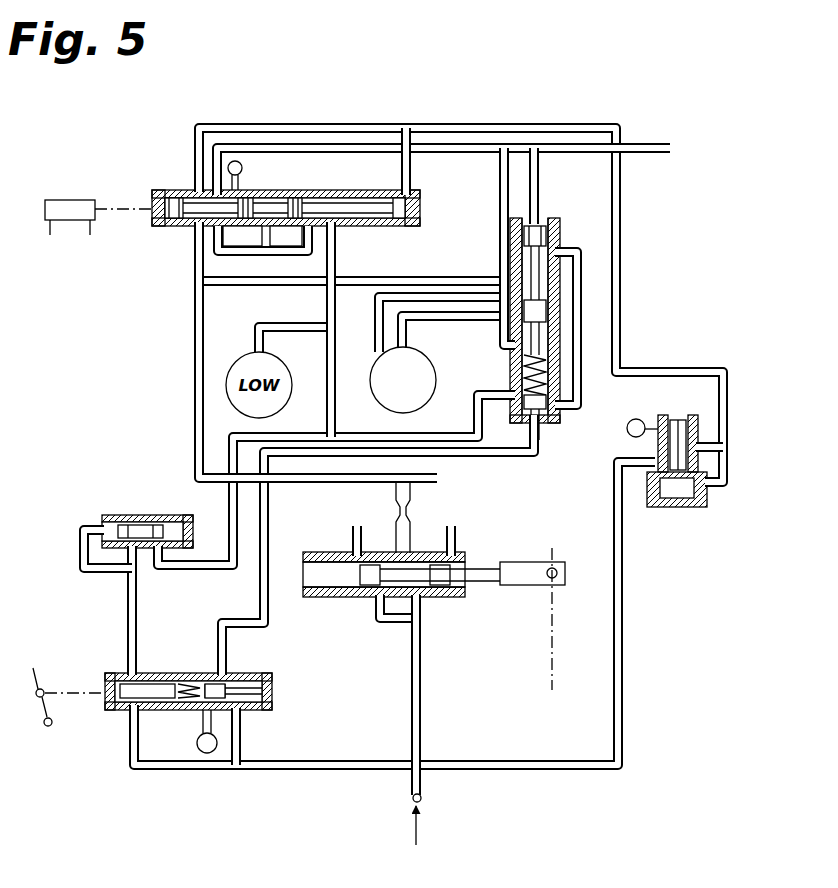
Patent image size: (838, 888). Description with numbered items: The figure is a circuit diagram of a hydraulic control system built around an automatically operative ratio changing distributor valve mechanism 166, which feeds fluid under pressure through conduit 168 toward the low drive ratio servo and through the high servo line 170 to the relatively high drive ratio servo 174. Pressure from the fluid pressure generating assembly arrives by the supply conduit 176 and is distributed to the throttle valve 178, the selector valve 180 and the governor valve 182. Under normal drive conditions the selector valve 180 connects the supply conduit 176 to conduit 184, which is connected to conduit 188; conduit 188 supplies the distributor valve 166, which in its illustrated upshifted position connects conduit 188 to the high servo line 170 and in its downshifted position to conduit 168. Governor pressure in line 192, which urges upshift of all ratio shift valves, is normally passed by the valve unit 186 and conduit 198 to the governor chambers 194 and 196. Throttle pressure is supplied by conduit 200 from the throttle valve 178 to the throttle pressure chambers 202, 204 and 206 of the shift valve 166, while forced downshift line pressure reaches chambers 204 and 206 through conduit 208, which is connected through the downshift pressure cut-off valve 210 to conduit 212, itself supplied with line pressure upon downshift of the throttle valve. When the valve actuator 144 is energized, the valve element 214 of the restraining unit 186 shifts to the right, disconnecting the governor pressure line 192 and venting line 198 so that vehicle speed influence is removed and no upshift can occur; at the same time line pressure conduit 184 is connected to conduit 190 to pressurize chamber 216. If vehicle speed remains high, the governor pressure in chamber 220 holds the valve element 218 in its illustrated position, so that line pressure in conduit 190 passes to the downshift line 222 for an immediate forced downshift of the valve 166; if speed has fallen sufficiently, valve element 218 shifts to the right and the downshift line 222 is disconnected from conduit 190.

The valve actuator 144 is at (73, 198).
The ratio changing distributor valve mechanism 166 is at (564, 310).
The conduit 168 is at (379, 333).
The high servo line 170 is at (468, 322).
The high drive ratio servo 174 is at (432, 397).
The supply conduit 176 is at (423, 789).
The throttle valve 178 is at (116, 709).
The selector valve 180 is at (351, 601).
The governor valve 182 is at (693, 508).
The conduit 184 is at (206, 357).
The valve unit 186 is at (295, 199).
The conduit 188 is at (411, 279).
The conduit 190 is at (282, 254).
The governor pressure line 192 is at (621, 252).
The governor chamber 194 is at (538, 226).
The governor chamber 196 is at (562, 332).
The conduit 198 is at (312, 150).
The conduit 200 is at (258, 590).
The throttle pressure chamber 202 is at (546, 416).
The throttle pressure chamber 204 is at (562, 252).
The throttle pressure chamber 206 is at (552, 373).
The conduit 208 is at (382, 433).
The downshift pressure cut-off valve 210 is at (160, 514).
The conduit 212 is at (128, 616).
The valve element 214 is at (178, 214).
The chamber 216 is at (268, 196).
The valve element 218 is at (322, 200).
The chamber 220 is at (422, 204).
The downshift line 222 is at (329, 383).